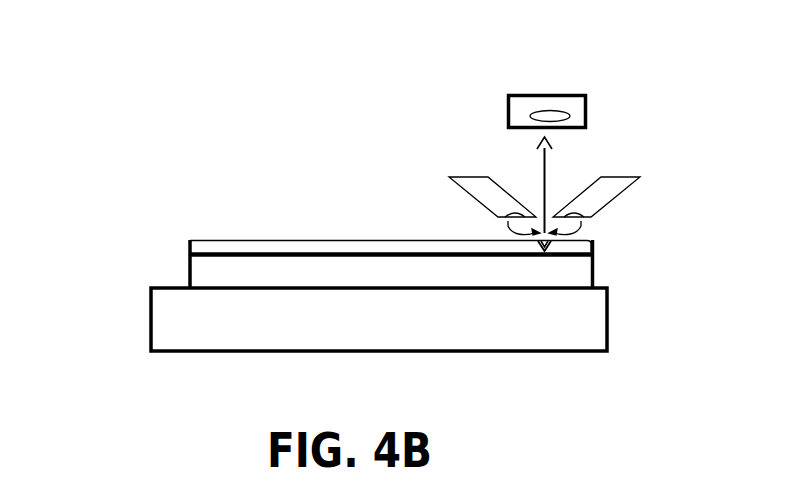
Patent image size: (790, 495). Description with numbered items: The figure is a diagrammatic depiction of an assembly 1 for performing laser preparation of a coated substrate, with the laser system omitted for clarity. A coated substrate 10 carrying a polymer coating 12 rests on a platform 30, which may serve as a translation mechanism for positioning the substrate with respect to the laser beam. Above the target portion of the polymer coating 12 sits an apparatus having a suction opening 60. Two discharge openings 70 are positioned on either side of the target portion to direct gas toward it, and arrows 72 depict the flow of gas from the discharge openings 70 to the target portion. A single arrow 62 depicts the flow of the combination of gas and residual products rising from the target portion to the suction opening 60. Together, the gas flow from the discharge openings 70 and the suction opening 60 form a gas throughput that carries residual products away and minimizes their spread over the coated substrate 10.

The assembly 1 is at (126, 124).
The coated substrate 10 is at (213, 271).
The polymer coating 12 is at (567, 247).
The platform 30 is at (176, 317).
The suction opening 60 is at (583, 113).
The arrow 62 is at (547, 168).
The discharge opening 70 is at (472, 186).
The arrows 72 is at (508, 227).